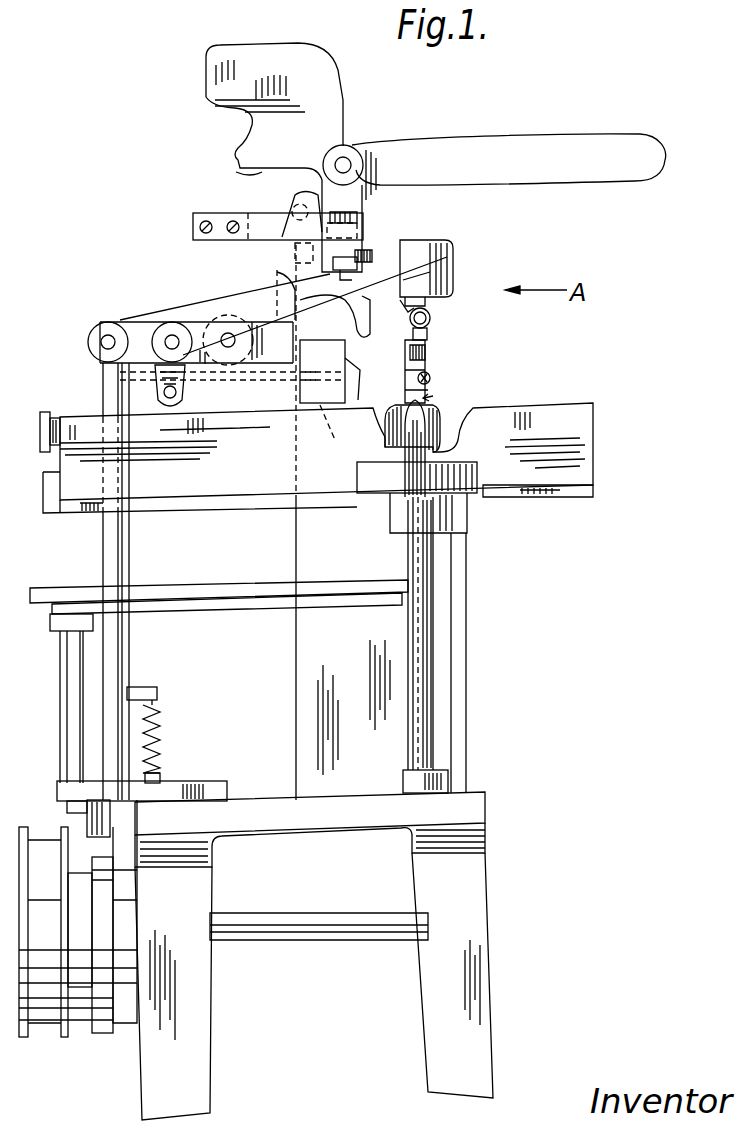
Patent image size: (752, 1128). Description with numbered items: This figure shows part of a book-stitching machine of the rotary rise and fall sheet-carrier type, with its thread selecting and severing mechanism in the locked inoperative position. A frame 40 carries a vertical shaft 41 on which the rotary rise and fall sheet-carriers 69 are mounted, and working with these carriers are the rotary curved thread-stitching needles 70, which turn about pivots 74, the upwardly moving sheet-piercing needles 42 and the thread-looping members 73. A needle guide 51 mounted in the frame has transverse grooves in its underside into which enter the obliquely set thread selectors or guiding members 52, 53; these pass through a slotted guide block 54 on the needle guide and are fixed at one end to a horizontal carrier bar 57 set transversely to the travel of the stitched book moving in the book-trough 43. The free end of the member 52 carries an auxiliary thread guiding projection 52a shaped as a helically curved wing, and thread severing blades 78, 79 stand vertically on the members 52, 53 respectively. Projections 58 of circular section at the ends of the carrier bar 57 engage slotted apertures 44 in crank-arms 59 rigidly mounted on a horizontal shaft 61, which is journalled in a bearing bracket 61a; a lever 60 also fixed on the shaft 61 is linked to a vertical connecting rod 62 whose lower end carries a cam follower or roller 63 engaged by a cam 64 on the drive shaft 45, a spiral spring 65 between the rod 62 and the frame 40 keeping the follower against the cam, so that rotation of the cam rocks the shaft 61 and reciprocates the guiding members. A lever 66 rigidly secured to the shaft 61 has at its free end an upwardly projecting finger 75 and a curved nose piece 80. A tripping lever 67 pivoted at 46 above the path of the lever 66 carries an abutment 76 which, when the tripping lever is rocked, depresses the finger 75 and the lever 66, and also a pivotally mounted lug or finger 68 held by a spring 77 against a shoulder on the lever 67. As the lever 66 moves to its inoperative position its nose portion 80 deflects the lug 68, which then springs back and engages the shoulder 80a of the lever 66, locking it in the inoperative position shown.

The frame 40 is at (468, 852).
The vertical shaft 41 is at (447, 697).
The sheet-piercing needles 42 is at (470, 425).
The book-trough 43 is at (210, 590).
The slotted apertures 44 is at (162, 418).
The drive shaft 45 is at (300, 913).
The pivot 46 is at (345, 165).
The needle guide 51 is at (430, 343).
The thread guiding member 52 is at (325, 432).
The auxiliary thread guiding projection 52a is at (433, 397).
The thread guiding member 53 is at (432, 412).
The slotted guide block 54 is at (267, 393).
The carrier bar 57 is at (195, 398).
The projections 58 is at (110, 393).
The crank-arms 59 is at (100, 365).
The lever 60 is at (118, 322).
The horizontal shaft 61 is at (170, 338).
The bearing bracket 61a is at (300, 305).
The connecting rod 62 is at (115, 556).
The cam follower 63 is at (85, 820).
The cam 64 is at (100, 893).
The spiral spring 65 is at (163, 740).
The lever 66 is at (265, 300).
The tripping lever 67 is at (322, 122).
The lug 68 is at (358, 262).
The sheet-carriers 69 is at (505, 470).
The thread-stitching needles 70 is at (380, 372).
The thread-looping members 73 is at (428, 378).
The pivots 74 is at (445, 405).
The finger 75 is at (320, 220).
The abutment 76 is at (238, 160).
The spring 77 is at (420, 240).
The thread severing blade 78 is at (322, 371).
The thread severing blade 79 is at (352, 379).
The curved nose piece 80 is at (430, 255).
The shoulder 80a is at (430, 287).